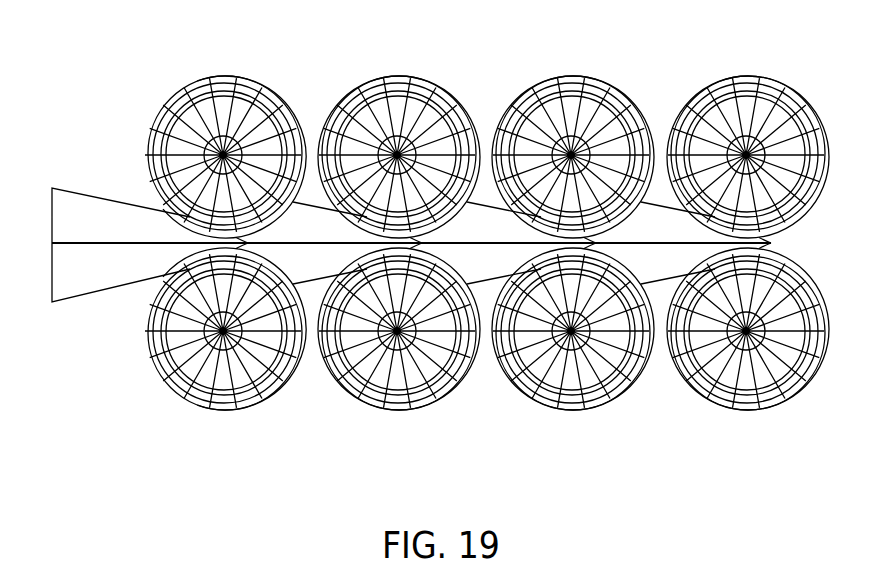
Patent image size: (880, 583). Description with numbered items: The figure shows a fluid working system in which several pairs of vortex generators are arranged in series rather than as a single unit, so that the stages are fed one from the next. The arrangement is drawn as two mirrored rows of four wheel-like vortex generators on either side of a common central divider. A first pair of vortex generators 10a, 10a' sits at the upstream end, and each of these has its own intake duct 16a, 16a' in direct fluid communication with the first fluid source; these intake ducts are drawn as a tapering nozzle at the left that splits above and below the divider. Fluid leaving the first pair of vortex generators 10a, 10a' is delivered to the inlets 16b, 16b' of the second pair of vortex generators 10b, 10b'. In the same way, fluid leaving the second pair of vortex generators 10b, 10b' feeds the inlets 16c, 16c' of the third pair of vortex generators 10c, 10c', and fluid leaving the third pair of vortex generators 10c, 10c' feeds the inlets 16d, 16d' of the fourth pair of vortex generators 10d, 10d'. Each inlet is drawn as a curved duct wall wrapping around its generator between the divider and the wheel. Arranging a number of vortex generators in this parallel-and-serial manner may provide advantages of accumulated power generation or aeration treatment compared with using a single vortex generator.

The vortex generator 10a is at (223, 129).
The vortex generator 10b is at (397, 130).
The vortex generator 10c is at (571, 130).
The vortex generator 10d is at (746, 125).
The vortex generator 10a' is at (223, 359).
The vortex generator 10b' is at (397, 365).
The vortex generator 10c' is at (571, 372).
The vortex generator 10d' is at (746, 365).
The intake duct 16a is at (165, 159).
The inlet 16b is at (376, 143).
The inlet 16c is at (552, 144).
The inlet 16d is at (732, 144).
The intake duct 16a' is at (166, 326).
The inlet 16b' is at (381, 343).
The inlet 16c' is at (560, 355).
The inlet 16d' is at (735, 346).